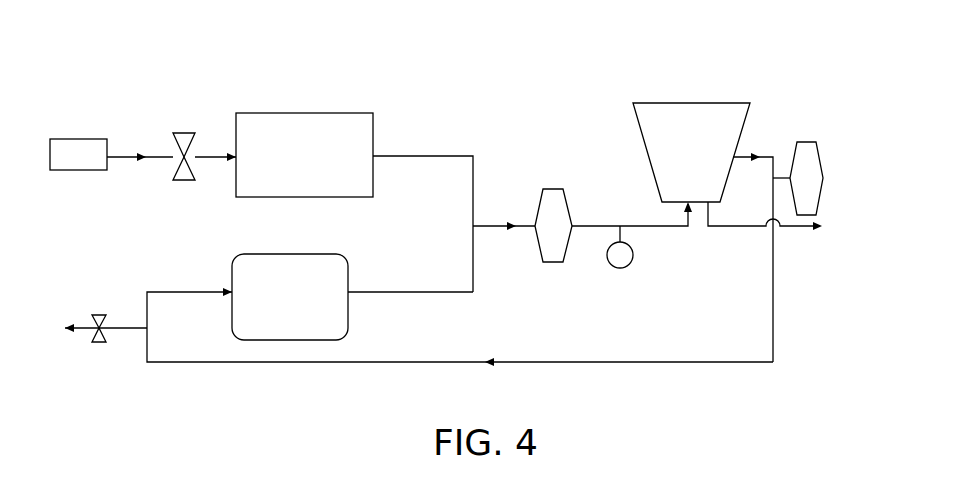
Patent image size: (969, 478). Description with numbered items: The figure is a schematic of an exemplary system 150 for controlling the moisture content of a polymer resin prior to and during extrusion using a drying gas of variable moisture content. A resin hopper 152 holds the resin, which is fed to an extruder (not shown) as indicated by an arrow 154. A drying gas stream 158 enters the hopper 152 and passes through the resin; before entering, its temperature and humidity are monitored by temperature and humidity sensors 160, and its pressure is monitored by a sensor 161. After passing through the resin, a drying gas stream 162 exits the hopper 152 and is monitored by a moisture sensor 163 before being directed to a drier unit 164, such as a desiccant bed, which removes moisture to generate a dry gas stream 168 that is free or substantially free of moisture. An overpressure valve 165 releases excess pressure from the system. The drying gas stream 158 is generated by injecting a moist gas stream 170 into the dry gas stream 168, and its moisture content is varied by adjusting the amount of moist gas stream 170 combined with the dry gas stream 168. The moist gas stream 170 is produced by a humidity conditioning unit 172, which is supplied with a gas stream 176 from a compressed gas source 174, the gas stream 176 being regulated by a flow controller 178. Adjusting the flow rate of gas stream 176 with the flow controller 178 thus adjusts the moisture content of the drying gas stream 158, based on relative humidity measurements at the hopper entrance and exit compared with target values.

The system 150 is at (428, 50).
The resin hopper 152 is at (708, 167).
The arrow 154 is at (725, 227).
The drying gas stream 158 is at (660, 227).
The temperature and humidity sensors 160 is at (553, 262).
The sensor 161 is at (625, 267).
The drying gas stream 162 is at (762, 156).
The moisture sensor 163 is at (823, 168).
The drier unit 164 is at (310, 304).
The overpressure valve 165 is at (98, 343).
The dry gas stream 168 is at (405, 293).
The moist gas stream 170 is at (430, 156).
The humidity conditioning unit 172 is at (324, 167).
The compressed gas source 174 is at (92, 139).
The gas stream 176 is at (210, 157).
The flow controller 178 is at (186, 133).